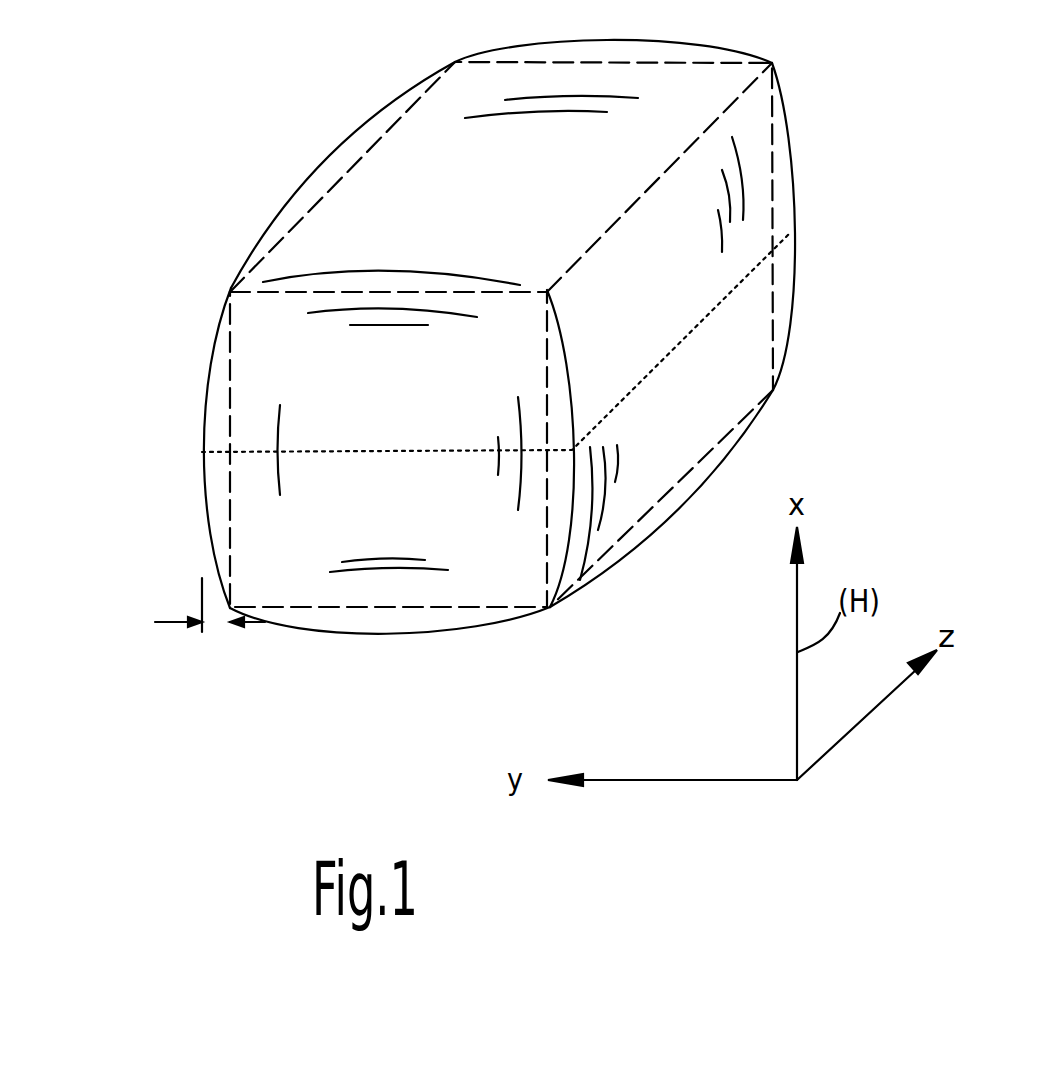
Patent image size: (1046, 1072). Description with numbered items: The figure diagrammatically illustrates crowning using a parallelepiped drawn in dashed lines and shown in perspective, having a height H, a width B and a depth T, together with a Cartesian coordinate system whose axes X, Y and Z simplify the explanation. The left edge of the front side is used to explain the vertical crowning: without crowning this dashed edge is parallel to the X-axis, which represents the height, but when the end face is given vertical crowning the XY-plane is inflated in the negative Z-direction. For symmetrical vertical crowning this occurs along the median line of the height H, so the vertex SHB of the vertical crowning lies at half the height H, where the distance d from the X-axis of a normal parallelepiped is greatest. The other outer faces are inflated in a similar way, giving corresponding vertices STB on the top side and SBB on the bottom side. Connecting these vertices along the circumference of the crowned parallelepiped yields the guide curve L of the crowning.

The vertex of the crowning on the top side STB is at (350, 167).
The vertex of the vertical crowning SHB is at (202, 452).
The vertex of the crowning on the bottom side SBB is at (386, 627).
The height H is at (237, 413).
The width B is at (392, 292).
The guide curve L is at (388, 453).
The depth T is at (637, 197).
The distance d is at (210, 622).